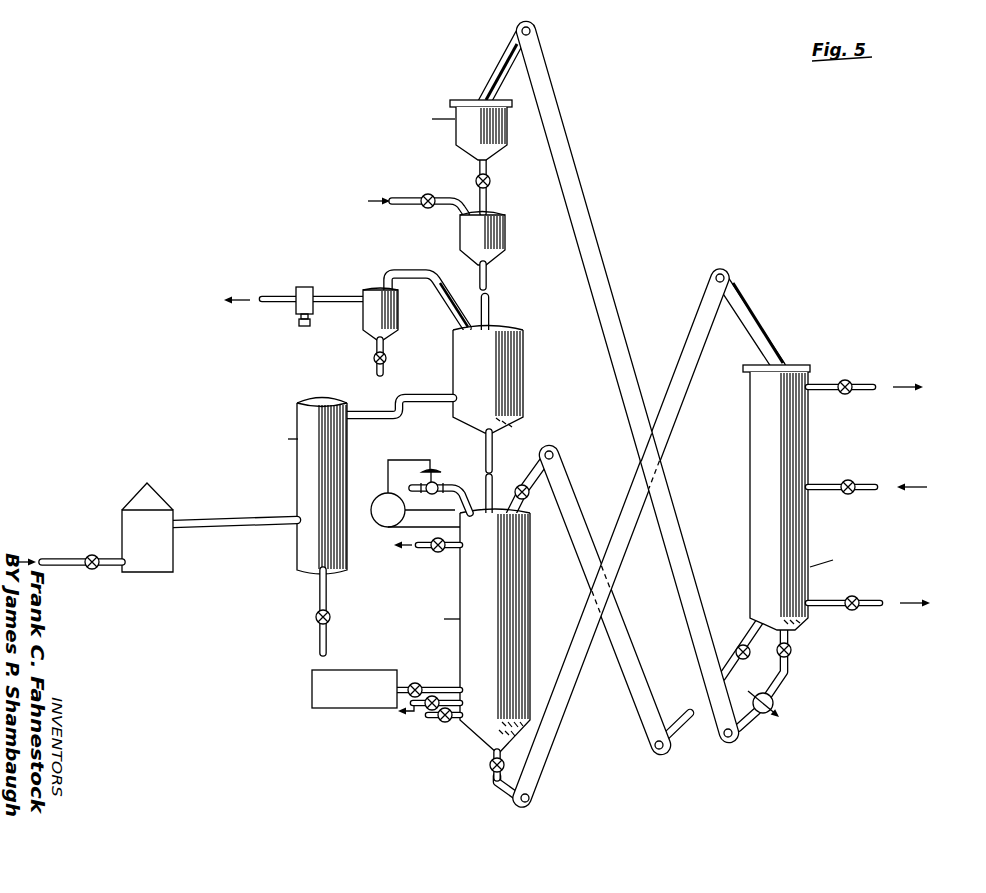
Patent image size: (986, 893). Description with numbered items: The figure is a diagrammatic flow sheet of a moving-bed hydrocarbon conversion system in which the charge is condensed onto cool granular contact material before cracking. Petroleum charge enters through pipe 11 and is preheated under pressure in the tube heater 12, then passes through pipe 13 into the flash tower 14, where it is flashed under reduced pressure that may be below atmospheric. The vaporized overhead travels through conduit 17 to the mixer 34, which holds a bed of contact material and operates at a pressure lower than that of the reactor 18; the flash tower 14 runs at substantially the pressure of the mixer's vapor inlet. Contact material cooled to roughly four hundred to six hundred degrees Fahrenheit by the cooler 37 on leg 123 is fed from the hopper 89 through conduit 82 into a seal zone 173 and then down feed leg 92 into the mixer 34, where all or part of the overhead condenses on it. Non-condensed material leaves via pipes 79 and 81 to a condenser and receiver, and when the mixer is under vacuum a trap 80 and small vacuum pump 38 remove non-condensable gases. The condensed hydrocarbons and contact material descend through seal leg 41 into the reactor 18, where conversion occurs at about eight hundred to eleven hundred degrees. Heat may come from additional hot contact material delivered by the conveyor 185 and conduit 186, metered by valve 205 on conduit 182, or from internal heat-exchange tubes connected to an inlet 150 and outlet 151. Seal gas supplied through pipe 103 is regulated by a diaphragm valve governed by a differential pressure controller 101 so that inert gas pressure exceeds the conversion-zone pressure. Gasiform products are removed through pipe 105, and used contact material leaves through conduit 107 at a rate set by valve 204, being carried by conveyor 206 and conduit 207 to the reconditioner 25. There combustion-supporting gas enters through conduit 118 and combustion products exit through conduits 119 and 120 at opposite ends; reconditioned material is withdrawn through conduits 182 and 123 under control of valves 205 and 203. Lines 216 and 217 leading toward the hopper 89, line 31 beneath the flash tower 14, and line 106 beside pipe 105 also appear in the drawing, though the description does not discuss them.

The pipe 11 is at (70, 570).
The tube heater 12 is at (147, 527).
The pipe 13 is at (231, 531).
The flash tower 14 is at (300, 473).
The conduit 17 is at (382, 423).
The reactor 18 is at (518, 637).
The reconditioner 25 is at (798, 441).
The flash tower bottoms line 31 is at (320, 635).
The mixer 34 is at (526, 349).
The cooler 37 is at (776, 703).
The vacuum pump 38 is at (306, 287).
The seal leg 41 is at (494, 446).
The pipe 79 is at (434, 290).
The trap 80 is at (365, 314).
The pipe 81 is at (336, 297).
The conduit 82 is at (481, 167).
The hopper 89 is at (462, 135).
The feed leg 92 is at (489, 279).
The differential pressure controller 101 is at (437, 472).
The pipe 103 is at (459, 496).
The pipe 105 is at (454, 674).
The product withdrawal line 106 is at (434, 722).
The conduit 107 is at (512, 789).
The conduit 118 is at (862, 483).
The conduit 119 is at (862, 383).
The conduit 120 is at (866, 608).
The conduit 123 is at (758, 724).
The inlet 150 is at (412, 712).
The outlet 151 is at (432, 549).
The seal zone 173 is at (460, 232).
The conduit 182 is at (692, 727).
The conveyor 185 is at (640, 697).
The conduit 186 is at (524, 506).
The valve 203 is at (793, 651).
The valve 204 is at (491, 767).
The valve 205 is at (746, 645).
The conveyor 206 is at (543, 763).
The conduit 207 is at (758, 318).
The hopper feed line 216 is at (498, 67).
The catalyst lift line 217 is at (588, 228).